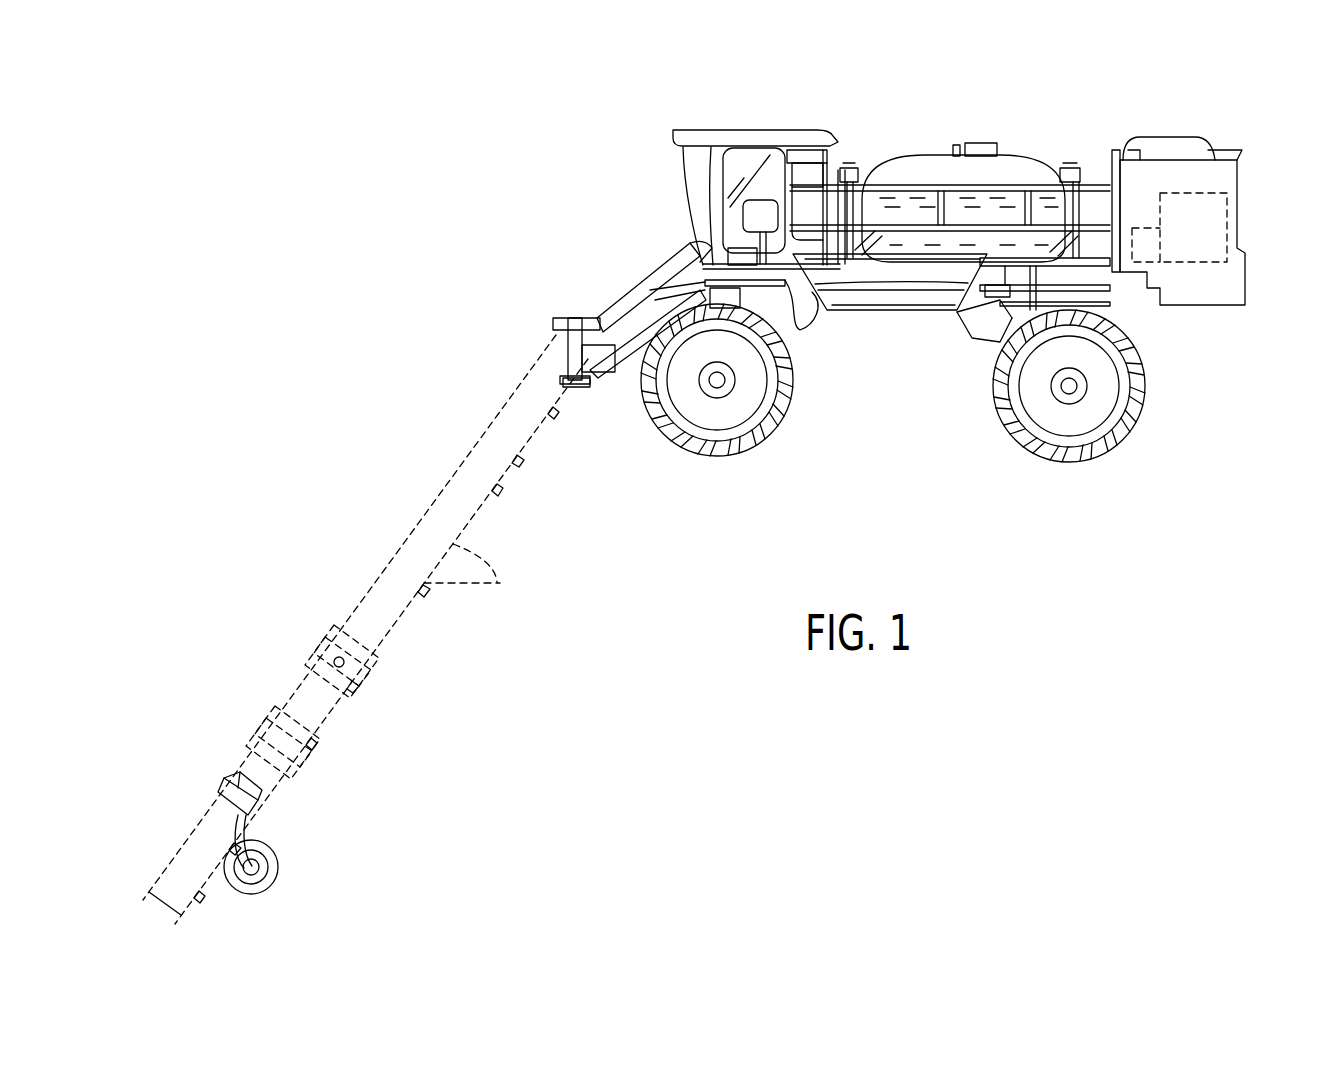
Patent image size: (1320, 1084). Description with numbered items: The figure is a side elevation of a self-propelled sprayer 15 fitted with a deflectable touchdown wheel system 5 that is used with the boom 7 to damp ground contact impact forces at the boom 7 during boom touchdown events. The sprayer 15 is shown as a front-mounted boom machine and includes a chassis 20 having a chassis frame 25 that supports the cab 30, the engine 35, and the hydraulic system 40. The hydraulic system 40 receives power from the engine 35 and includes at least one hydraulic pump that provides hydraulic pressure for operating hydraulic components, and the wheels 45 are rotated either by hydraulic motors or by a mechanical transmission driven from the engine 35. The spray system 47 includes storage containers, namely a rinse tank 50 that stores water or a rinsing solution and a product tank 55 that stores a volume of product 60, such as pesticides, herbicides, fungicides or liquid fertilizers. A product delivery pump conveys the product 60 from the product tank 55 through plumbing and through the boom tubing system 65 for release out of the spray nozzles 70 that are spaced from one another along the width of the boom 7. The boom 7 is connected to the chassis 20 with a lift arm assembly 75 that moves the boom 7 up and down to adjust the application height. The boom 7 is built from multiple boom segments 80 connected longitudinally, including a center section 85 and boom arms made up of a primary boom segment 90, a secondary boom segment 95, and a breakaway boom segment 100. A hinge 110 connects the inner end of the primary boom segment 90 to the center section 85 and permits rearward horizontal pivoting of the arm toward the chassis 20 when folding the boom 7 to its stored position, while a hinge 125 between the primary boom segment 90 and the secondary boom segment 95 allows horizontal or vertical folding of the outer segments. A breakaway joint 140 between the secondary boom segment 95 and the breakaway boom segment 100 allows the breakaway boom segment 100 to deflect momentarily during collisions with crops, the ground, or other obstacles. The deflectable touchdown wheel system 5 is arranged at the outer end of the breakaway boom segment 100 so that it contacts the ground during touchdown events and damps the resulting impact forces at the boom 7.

The deflectable touchdown wheel system 5 is at (300, 874).
The boom 7 is at (351, 629).
The self-propelled sprayer 15 is at (962, 297).
The chassis 20 is at (917, 320).
The chassis frame 25 is at (972, 336).
The cab 30 is at (762, 127).
The engine 35 is at (1203, 212).
The hydraulic system 40 is at (1141, 232).
The wheels 45 is at (753, 449).
The spray system 47 is at (1037, 142).
The rinse tank 50 is at (1070, 170).
The product tank 55 is at (932, 152).
The product 60 is at (895, 218).
The boom tubing system 65 is at (508, 516).
The spray nozzles 70 is at (500, 584).
The lift arm assembly 75 is at (658, 262).
The boom segments 80 is at (378, 462).
The center section 85 is at (569, 296).
The primary boom segment 90 is at (437, 462).
The secondary boom segment 95 is at (302, 660).
The breakaway boom segment 100 is at (207, 796).
The hinge 110 is at (558, 360).
The hinge 125 is at (372, 690).
The breakaway joint 140 is at (312, 772).